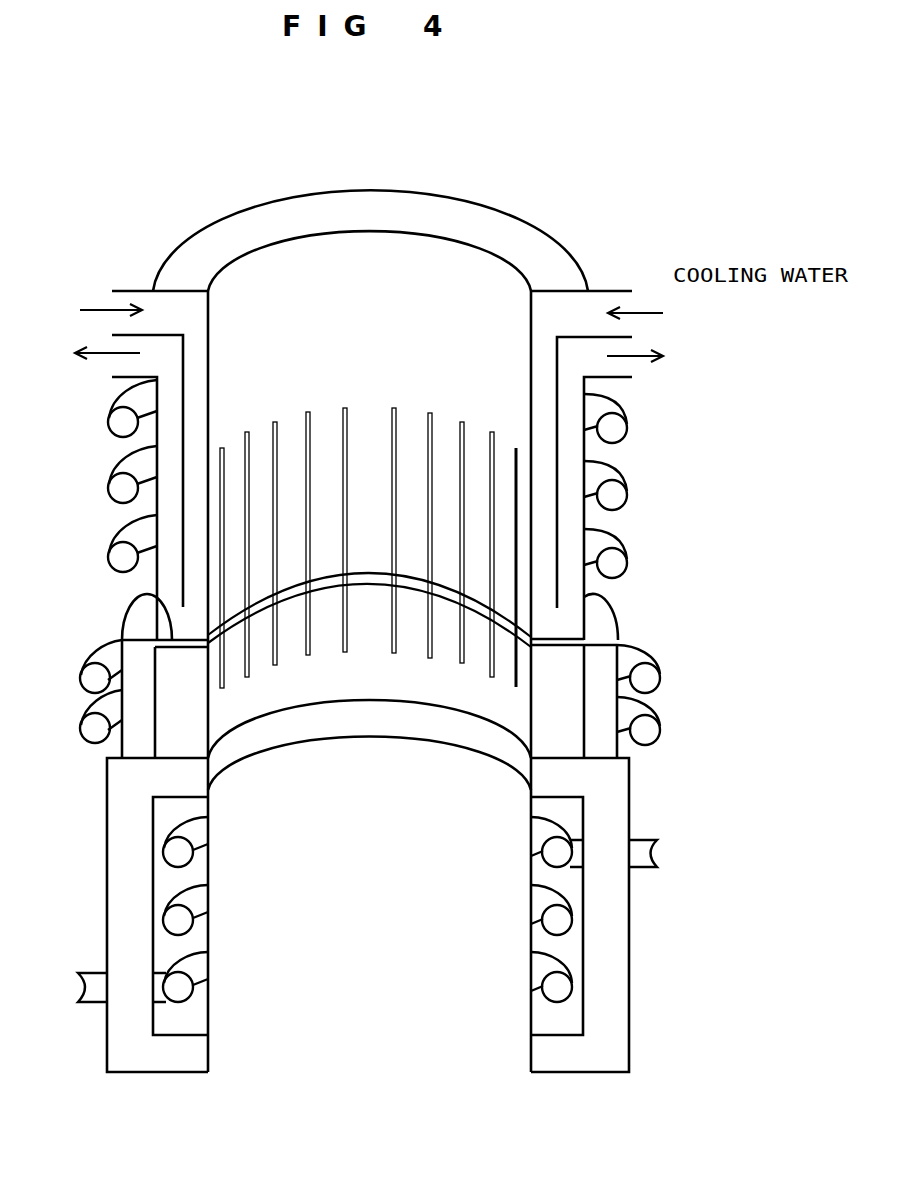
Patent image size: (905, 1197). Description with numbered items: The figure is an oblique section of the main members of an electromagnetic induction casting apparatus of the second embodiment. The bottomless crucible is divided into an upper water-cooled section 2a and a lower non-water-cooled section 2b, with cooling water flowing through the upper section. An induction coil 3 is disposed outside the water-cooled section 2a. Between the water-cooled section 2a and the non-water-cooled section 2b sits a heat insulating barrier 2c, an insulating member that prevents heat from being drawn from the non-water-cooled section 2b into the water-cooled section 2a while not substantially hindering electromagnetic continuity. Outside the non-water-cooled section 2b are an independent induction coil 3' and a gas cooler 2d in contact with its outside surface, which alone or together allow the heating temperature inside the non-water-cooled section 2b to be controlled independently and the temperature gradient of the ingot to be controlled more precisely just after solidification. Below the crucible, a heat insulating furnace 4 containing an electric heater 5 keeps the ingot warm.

The water-cooled section 2a is at (575, 530).
The non-water-cooled section 2b is at (572, 715).
The heat insulating barrier 2c is at (170, 637).
The gas cooler 2d is at (137, 705).
The induction coil 3 is at (412, 482).
The induction coil 3' is at (678, 695).
The heat insulating furnace 4 is at (629, 921).
The electric heater 5 is at (565, 970).